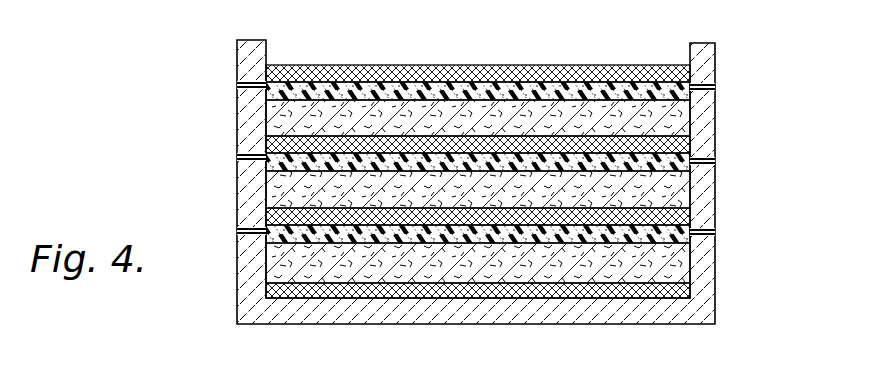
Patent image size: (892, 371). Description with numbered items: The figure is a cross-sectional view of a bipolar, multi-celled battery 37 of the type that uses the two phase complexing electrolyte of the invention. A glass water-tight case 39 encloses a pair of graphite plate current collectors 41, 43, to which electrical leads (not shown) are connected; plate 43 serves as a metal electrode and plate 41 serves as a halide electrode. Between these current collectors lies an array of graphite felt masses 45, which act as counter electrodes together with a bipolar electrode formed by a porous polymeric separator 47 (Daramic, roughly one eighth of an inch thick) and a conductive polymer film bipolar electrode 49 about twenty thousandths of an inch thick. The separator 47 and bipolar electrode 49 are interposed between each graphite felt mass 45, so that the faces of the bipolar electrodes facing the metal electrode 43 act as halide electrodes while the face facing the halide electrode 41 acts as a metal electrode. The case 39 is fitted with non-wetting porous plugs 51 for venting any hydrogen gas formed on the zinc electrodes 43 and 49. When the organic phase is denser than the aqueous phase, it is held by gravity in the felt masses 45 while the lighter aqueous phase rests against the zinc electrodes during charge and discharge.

The bipolar multi-celled battery 37 is at (735, 46).
The glass water-tight case 39 is at (703, 203).
The graphite plate current collector 41 is at (268, 292).
The graphite plate current collector 43 is at (275, 77).
The graphite felt mass 45 is at (270, 124).
The porous polymeric separator 47 is at (716, 92).
The bipolar electrode 49 is at (270, 149).
The non-wetting porous plug 51 is at (692, 233).